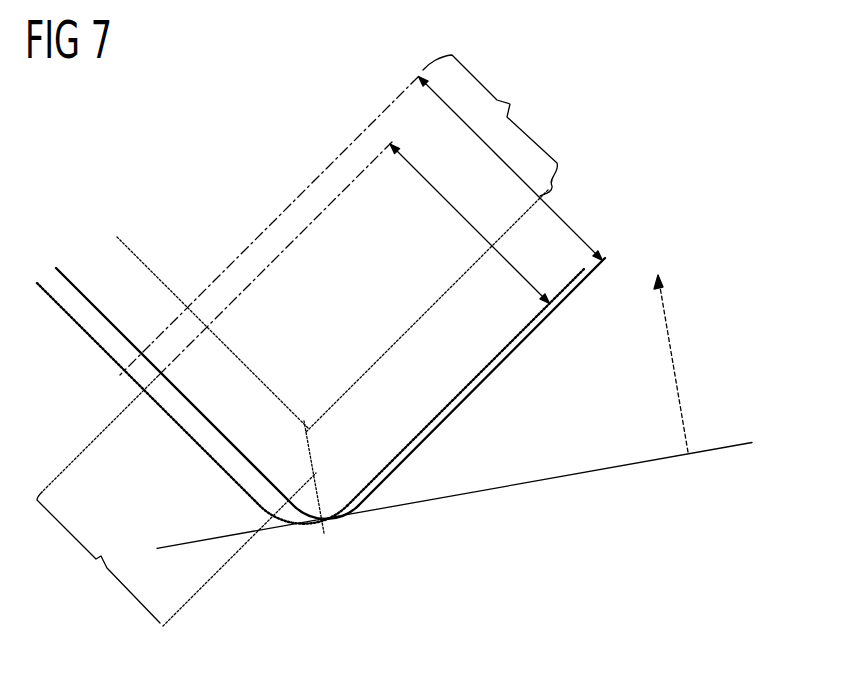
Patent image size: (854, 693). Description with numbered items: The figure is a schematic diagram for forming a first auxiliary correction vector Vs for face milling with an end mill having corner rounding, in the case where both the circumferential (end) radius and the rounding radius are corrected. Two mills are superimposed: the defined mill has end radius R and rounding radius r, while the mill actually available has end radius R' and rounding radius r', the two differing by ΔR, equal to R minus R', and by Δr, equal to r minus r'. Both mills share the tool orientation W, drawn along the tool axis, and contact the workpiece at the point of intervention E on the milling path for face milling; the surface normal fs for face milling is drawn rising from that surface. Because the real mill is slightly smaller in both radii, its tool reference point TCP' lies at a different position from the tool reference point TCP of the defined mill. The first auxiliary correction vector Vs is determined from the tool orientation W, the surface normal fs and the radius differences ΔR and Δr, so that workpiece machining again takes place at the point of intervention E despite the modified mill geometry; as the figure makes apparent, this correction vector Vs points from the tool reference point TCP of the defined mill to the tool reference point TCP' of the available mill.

The tool orientation W is at (320, 171).
The end radius R is at (482, 291).
The end radius of the available mill R' is at (466, 325).
The rounding radius r is at (207, 365).
The rounding radius of the available mill r' is at (192, 401).
The tool reference point of the defined mill TCP is at (84, 358).
The tool reference point of the available mill TCP' is at (256, 309).
The first auxiliary correction vector Vs is at (56, 381).
The surface normal for face milling fs is at (673, 360).
The point of intervention E is at (322, 523).